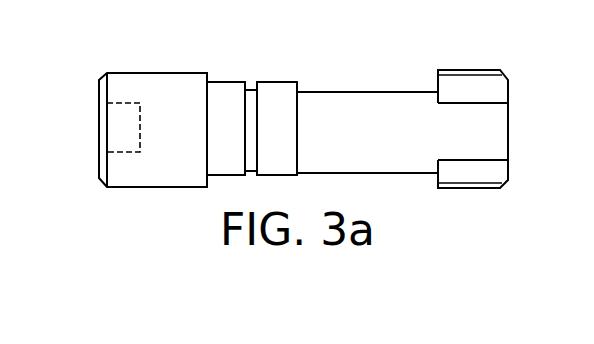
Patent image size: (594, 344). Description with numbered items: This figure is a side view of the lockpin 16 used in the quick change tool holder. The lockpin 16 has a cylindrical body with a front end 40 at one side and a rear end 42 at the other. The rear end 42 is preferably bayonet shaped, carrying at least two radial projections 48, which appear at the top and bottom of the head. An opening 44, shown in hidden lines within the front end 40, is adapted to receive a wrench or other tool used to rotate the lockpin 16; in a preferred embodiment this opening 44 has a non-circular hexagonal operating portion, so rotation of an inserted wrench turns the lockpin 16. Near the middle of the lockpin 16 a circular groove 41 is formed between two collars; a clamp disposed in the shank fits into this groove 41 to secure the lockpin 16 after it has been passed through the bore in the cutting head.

The lockpin 16 is at (353, 174).
The front end 40 is at (99, 178).
The circular groove 41 is at (251, 174).
The rear end 42 is at (508, 122).
The opening 44 is at (120, 122).
The radial projections 48 is at (473, 69).